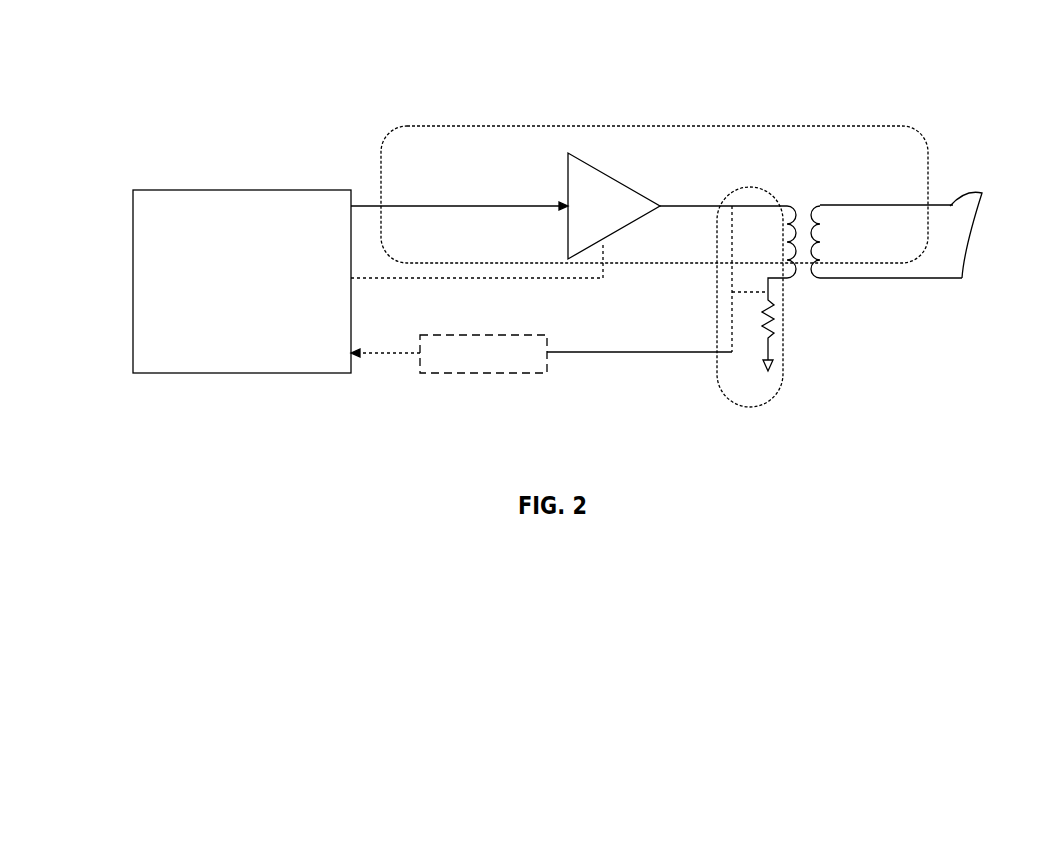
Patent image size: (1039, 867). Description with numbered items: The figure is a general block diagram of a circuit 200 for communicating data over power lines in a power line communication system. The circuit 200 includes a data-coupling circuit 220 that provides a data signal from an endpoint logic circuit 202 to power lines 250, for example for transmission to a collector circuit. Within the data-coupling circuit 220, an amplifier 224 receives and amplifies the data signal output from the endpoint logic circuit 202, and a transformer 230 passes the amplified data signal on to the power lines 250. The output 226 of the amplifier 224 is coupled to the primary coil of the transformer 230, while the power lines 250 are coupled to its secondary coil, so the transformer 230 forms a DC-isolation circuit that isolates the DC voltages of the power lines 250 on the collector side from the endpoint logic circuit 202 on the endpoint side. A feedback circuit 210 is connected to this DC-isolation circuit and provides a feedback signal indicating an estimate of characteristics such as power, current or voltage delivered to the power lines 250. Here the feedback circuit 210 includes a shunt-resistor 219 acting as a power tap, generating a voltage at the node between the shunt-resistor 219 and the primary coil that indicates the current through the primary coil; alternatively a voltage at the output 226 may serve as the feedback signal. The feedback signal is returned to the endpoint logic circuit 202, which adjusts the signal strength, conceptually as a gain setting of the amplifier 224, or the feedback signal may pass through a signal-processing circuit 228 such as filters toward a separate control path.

The circuit 200 is at (826, 90).
The endpoint logic circuit 202 is at (327, 189).
The feedback circuit 210 is at (777, 401).
The shunt-resistor 219 is at (779, 333).
The data-coupling circuit 220 is at (628, 126).
The amplifier 224 is at (624, 178).
The output 226 is at (686, 205).
The signal-processing circuit 228 is at (535, 373).
The transformer 230 is at (796, 194).
The power lines 250 is at (920, 230).